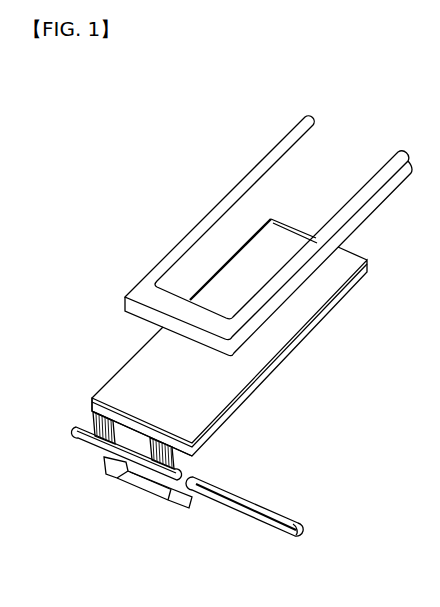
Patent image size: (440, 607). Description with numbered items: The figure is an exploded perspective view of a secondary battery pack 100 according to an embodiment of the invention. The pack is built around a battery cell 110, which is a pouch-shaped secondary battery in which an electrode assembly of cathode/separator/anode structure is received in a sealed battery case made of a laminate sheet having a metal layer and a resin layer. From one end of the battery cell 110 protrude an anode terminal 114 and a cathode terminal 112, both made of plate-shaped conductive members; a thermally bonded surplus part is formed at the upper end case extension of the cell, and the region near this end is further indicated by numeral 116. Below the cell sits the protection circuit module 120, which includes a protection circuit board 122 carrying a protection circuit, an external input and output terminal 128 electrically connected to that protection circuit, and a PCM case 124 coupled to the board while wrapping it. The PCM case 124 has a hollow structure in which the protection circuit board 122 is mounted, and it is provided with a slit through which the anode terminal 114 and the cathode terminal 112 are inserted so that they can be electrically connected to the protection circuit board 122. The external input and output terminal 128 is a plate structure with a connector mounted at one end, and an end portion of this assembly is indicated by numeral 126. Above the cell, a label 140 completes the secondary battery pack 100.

The secondary battery pack 100 is at (95, 154).
The battery cell 110 is at (345, 313).
The cathode terminal 112 is at (197, 457).
The anode terminal 114 is at (78, 420).
The sealing portion 116 is at (90, 401).
The protection circuit module 120 is at (215, 521).
The protection circuit board 122 is at (103, 460).
The PCM case 124 is at (222, 501).
The rod end 126 is at (300, 527).
The external input and output terminal 128 is at (138, 485).
The label 140 is at (352, 232).